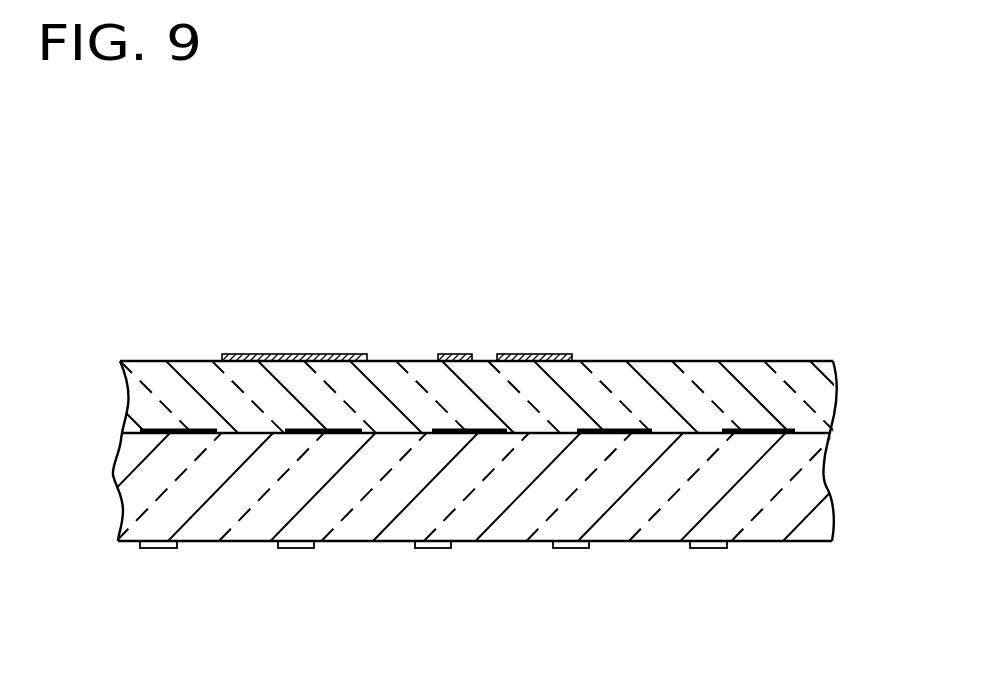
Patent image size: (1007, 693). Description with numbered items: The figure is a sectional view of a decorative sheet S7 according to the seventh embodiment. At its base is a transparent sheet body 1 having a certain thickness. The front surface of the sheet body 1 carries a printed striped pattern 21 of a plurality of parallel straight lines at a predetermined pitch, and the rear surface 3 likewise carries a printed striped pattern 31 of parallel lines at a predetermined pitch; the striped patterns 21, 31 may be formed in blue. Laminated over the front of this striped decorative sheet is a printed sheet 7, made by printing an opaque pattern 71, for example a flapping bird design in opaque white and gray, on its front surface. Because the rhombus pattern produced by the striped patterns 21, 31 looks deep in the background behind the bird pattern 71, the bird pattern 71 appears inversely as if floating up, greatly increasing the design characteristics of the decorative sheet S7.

The decorative sheet S7 is at (705, 290).
The printed sheet 7 is at (128, 398).
The opaque pattern 71 is at (252, 353).
The striped pattern 21 is at (781, 430).
The sheet body 1 is at (820, 478).
The rear surface 3 is at (808, 543).
The striped pattern 31 is at (710, 549).